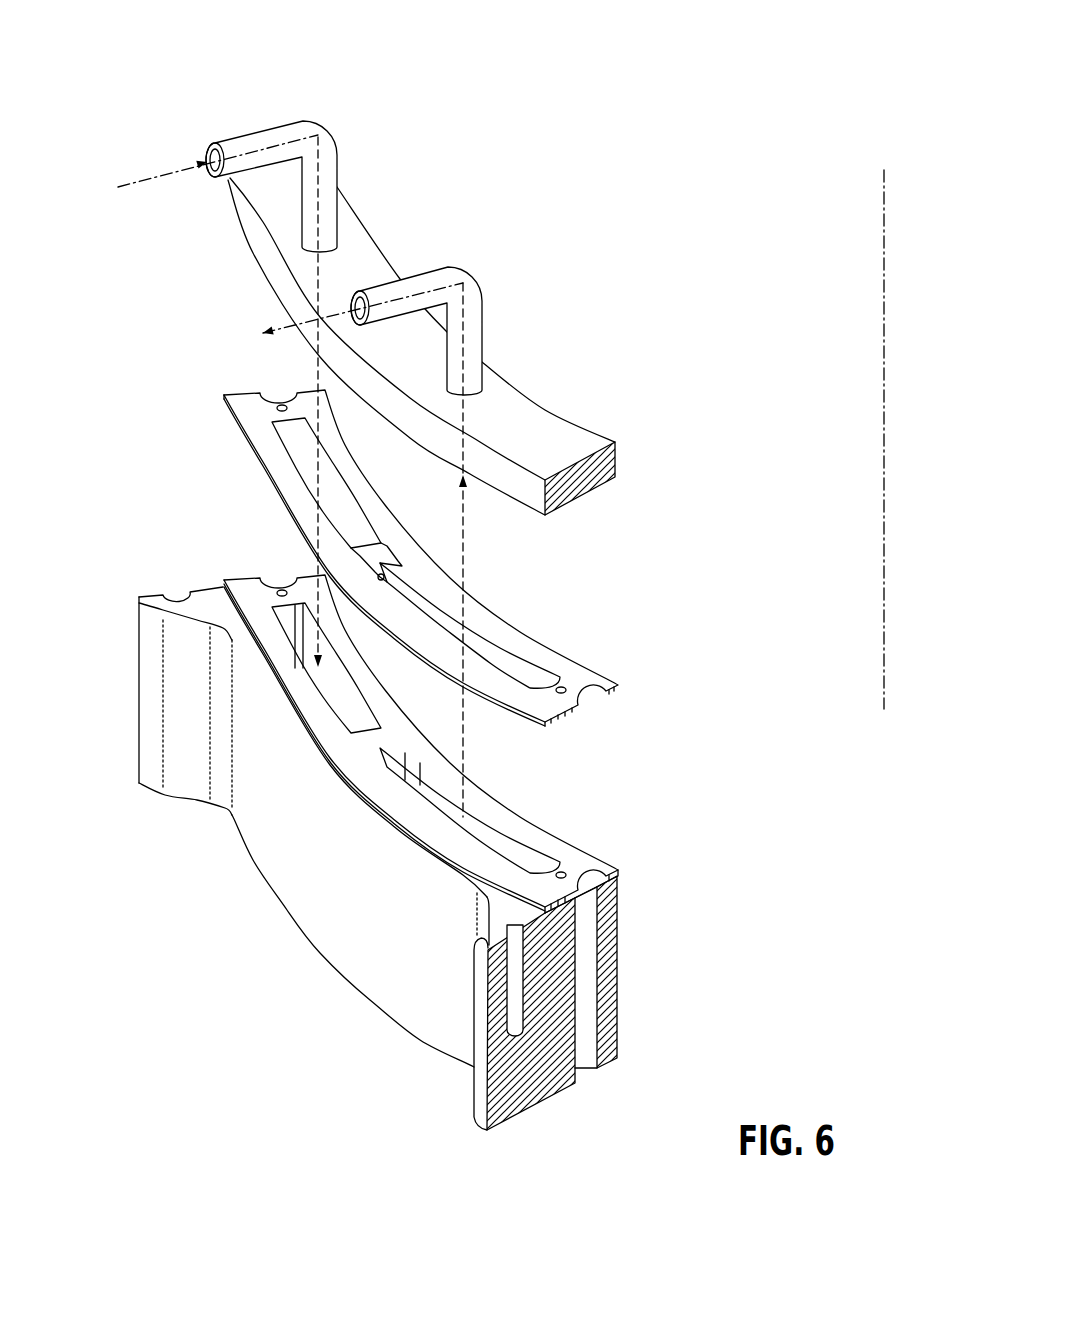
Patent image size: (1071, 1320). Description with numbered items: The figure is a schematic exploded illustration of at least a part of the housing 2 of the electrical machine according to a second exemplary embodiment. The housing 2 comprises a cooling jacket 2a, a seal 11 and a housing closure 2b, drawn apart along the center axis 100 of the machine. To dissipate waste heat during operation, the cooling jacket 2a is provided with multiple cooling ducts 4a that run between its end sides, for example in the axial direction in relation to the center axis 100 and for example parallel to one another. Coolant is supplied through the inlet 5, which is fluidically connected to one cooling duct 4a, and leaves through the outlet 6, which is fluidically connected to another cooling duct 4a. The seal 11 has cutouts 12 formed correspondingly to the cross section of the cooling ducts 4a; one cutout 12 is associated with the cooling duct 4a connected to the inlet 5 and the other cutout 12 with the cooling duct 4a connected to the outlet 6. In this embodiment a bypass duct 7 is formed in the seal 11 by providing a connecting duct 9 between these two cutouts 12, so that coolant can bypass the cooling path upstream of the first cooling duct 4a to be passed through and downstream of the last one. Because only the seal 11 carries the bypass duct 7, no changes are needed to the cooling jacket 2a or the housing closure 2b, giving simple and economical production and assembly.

The housing 2 is at (352, 804).
The cooling jacket 2a is at (331, 891).
The housing closure 2b is at (517, 420).
The cooling duct 4a is at (247, 578).
The inlet 5 is at (262, 142).
The outlet 6 is at (413, 287).
The bypass duct 7 is at (388, 552).
The connecting duct 9 is at (363, 543).
The seal 11 is at (394, 551).
The cutout 12 is at (297, 453).
The center axis 100 is at (884, 420).